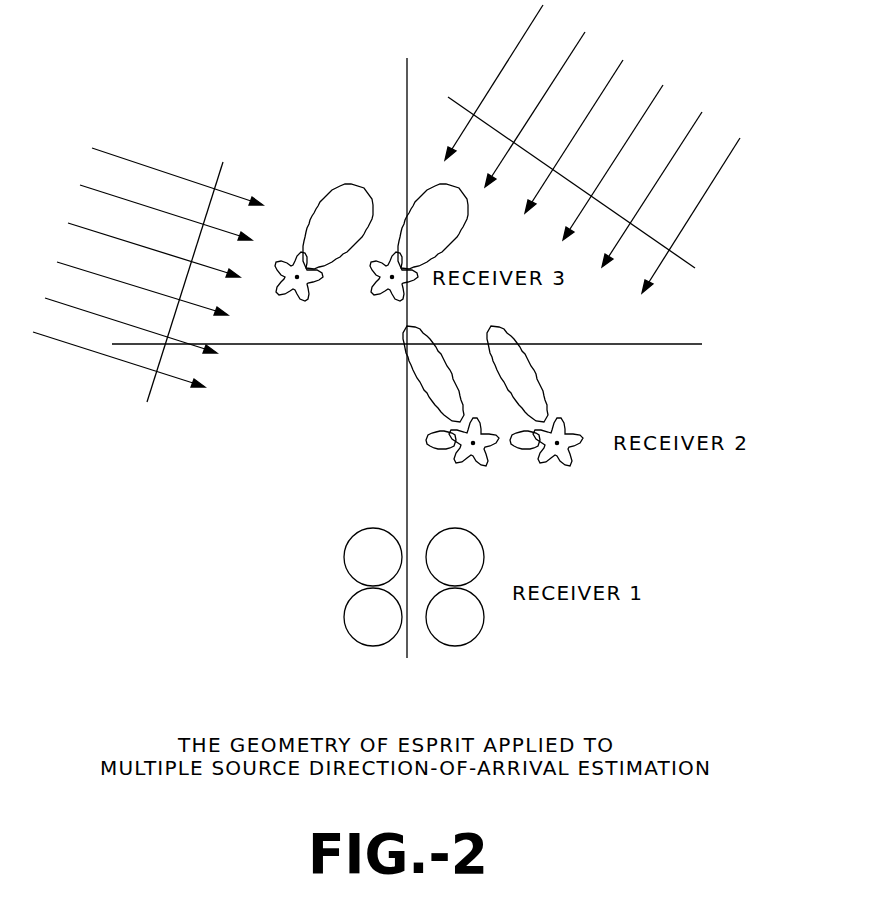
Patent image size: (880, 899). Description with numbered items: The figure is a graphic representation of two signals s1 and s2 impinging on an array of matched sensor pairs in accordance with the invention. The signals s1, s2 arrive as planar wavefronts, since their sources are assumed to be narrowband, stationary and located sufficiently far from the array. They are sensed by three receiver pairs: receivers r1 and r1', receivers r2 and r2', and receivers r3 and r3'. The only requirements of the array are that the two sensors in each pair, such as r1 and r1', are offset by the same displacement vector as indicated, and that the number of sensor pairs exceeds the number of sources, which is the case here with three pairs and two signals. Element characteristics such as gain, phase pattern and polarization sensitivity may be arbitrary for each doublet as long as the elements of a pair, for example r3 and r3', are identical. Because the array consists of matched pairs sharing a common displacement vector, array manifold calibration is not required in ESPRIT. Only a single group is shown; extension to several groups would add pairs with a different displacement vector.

The signal s1 is at (148, 249).
The signal s2 is at (610, 149).
The receiver r1 is at (373, 587).
The receiver r1' is at (455, 587).
The receiver r2 is at (451, 396).
The receiver r2' is at (535, 396).
The receiver r3 is at (324, 242).
The receiver r3' is at (419, 242).